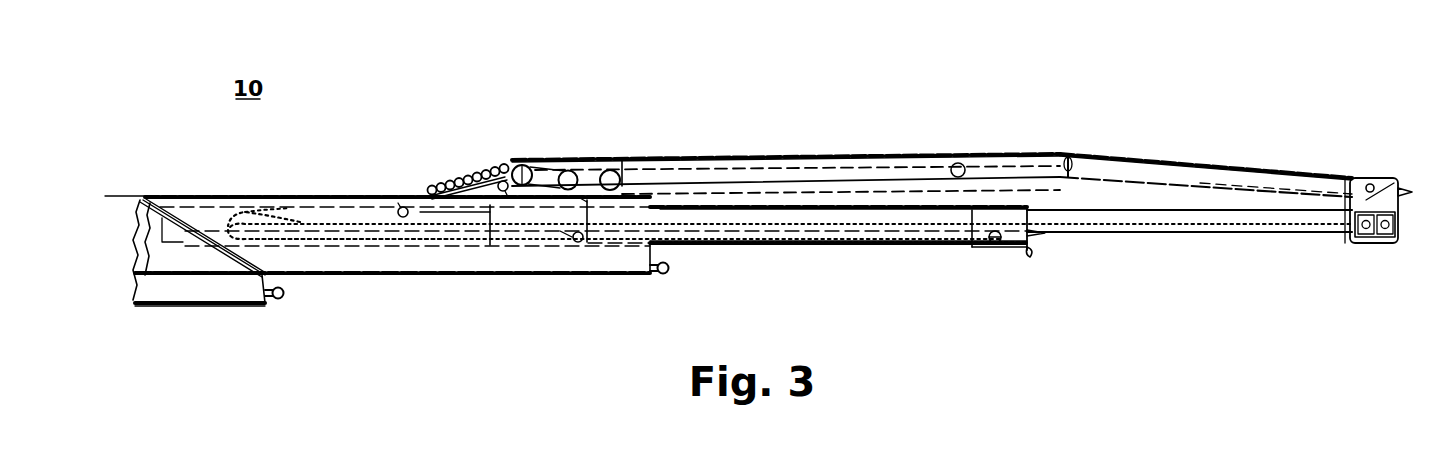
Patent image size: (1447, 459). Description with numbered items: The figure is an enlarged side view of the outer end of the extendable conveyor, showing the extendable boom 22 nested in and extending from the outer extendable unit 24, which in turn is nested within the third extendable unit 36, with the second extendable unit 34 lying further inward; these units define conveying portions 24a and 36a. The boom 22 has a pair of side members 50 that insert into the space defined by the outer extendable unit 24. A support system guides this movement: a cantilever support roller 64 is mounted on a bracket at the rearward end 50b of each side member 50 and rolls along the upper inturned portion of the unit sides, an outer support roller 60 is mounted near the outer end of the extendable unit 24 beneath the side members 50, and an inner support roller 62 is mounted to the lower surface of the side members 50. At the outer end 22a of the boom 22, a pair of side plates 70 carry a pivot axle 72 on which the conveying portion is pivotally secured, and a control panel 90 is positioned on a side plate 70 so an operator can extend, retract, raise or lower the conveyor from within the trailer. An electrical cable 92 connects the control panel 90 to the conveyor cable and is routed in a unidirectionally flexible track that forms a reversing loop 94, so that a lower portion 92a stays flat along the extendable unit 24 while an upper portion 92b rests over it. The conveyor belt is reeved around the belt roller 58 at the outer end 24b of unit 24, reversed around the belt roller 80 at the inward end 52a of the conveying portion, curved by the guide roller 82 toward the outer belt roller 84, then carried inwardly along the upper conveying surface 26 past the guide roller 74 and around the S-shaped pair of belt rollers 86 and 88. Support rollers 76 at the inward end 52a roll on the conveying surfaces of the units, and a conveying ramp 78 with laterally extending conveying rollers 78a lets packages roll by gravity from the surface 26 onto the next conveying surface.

The extendable boom 22 is at (1250, 175).
The outer end of extendable boom 22a is at (1345, 248).
The outer extendable unit 24 is at (836, 246).
The conveying portion of outer extendable unit 24a is at (757, 207).
The outer end of outer extendable unit 24b is at (1033, 247).
The upper conveying surface 26 is at (895, 155).
The second extendable unit 34 is at (175, 305).
The third extendable unit 36 is at (375, 275).
The conveying portion of third extendable unit 36a is at (178, 196).
The side members 50 is at (1190, 233).
The rearward end of side member 50b is at (418, 217).
The inward end of conveying portion 52a is at (560, 160).
The outer belt roller 58 is at (1050, 234).
The outer support roller 60 is at (995, 243).
The inner support roller 62 is at (580, 243).
The cantilever support roller 64 is at (398, 206).
The side plates 70 is at (1398, 210).
The pivot axle 72 is at (1370, 184).
The belt roller 74 is at (1070, 154).
The support rollers 76 is at (505, 192).
The conveying ramp 78 is at (488, 175).
The conveying rollers 78a is at (440, 186).
The belt roller 80 is at (614, 172).
The guide roller 82 is at (960, 163).
The outer belt roller 84 is at (1402, 190).
The belt roller 86 is at (522, 165).
The belt roller 88 is at (570, 170).
The control panel 90 is at (1378, 238).
The electrical cable 92 is at (1310, 232).
The lower portion of cable 92a is at (300, 241).
The upper portion of cable 92b is at (275, 218).
The reversing loop 94 is at (223, 210).